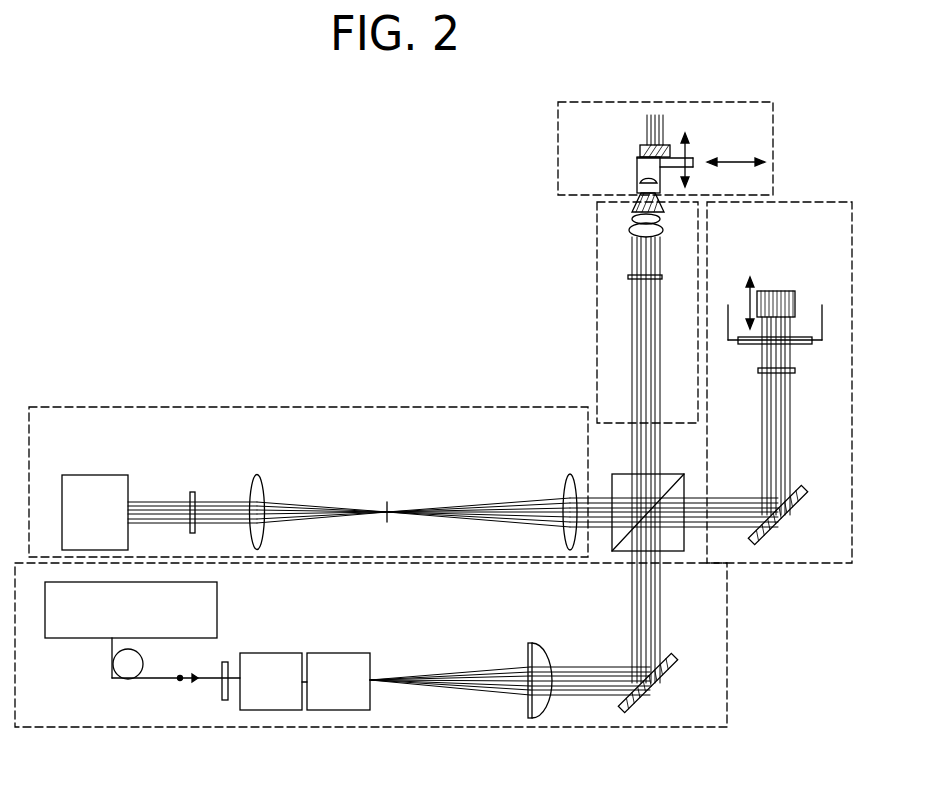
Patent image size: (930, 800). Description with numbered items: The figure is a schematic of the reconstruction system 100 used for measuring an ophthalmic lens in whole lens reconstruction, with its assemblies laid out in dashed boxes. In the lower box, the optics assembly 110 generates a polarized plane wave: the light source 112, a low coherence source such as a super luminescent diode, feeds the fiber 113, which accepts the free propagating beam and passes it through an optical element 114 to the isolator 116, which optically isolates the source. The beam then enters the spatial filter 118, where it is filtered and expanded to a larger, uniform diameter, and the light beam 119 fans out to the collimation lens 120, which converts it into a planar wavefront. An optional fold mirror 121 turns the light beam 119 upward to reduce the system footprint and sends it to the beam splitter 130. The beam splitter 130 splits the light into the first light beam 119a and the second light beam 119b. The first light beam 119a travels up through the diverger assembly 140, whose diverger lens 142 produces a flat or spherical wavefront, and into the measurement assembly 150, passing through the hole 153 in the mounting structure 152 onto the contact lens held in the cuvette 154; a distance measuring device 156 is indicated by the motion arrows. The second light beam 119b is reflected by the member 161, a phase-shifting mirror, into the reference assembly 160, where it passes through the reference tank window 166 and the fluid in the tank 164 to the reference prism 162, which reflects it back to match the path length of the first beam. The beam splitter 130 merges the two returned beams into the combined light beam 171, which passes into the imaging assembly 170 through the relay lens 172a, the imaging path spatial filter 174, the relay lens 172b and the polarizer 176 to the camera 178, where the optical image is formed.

The reconstruction system 100 is at (379, 274).
The optics assembly 110 is at (108, 730).
The light source 112 is at (217, 610).
The fiber 113 is at (118, 679).
The optical element 114 is at (222, 667).
The isolator 116 is at (272, 653).
The spatial filter 118 is at (365, 653).
The light beam 119 is at (473, 672).
The first light beam 119a is at (632, 378).
The second light beam 119b is at (735, 496).
The collimation lens 120 is at (537, 643).
The fold mirror 121 is at (660, 683).
The beam splitter 130 is at (683, 553).
The diverger assembly 140 is at (597, 276).
The diverger lens 142 is at (663, 229).
The measurement assembly 150 is at (777, 123).
The mounting structure 152 is at (661, 183).
The hole 153 is at (639, 183).
The cuvette 154 is at (638, 172).
The distance measuring device 156 is at (690, 152).
The reference assembly 160 is at (783, 202).
The member 161 is at (790, 510).
The reference prism 162 is at (785, 291).
The tank 164 is at (822, 344).
The reference tank window 166 is at (752, 345).
The imaging assembly 170 is at (128, 407).
The combined light beam 171 is at (510, 502).
The relay lens 172a is at (566, 482).
The relay lens 172b is at (262, 476).
The imaging path spatial filter 174 is at (389, 500).
The polarizer 176 is at (193, 492).
The camera 178 is at (95, 475).